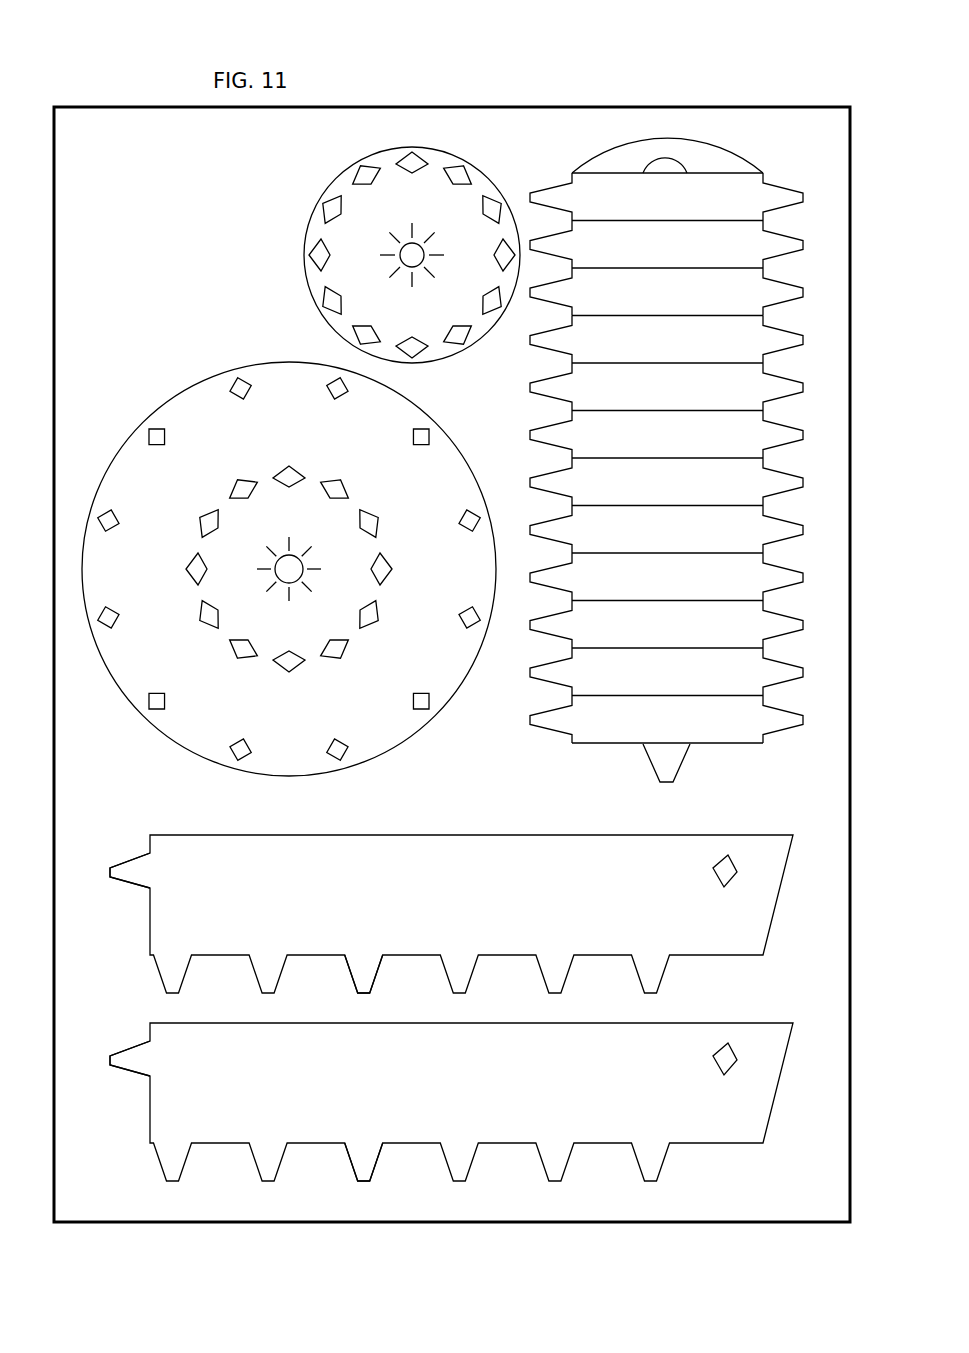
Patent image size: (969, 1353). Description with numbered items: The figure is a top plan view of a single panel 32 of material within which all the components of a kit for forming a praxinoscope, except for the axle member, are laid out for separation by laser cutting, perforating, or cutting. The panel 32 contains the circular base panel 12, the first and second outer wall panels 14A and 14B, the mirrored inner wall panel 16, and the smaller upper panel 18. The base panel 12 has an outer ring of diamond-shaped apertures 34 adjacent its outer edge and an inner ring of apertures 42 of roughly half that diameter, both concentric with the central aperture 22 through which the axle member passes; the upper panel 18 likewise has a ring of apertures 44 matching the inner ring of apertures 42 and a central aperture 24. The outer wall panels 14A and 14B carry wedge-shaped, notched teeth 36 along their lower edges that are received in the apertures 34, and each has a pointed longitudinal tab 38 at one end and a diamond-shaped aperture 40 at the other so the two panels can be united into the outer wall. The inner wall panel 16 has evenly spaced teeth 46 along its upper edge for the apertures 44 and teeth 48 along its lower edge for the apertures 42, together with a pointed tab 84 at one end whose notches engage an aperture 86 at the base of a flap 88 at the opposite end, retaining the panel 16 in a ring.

The base panel 12 is at (289, 569).
The first outer wall panel 14A is at (437, 1084).
The second outer wall panel 14B is at (415, 897).
The mirrored inner wall panel 16 is at (663, 459).
The upper panel 18 is at (394, 255).
The aperture 22 is at (298, 554).
The aperture 24 is at (398, 262).
The panel 32 is at (204, 316).
The apertures 34 is at (152, 432).
The teeth 36 is at (382, 975).
The tab 38 is at (128, 856).
The aperture 40 is at (730, 857).
The apertures 42 is at (372, 518).
The apertures 44 is at (330, 208).
The teeth 46 is at (535, 349).
The teeth 48 is at (792, 351).
The tab 84 is at (647, 756).
The aperture 86 is at (690, 165).
The flap 88 is at (598, 156).